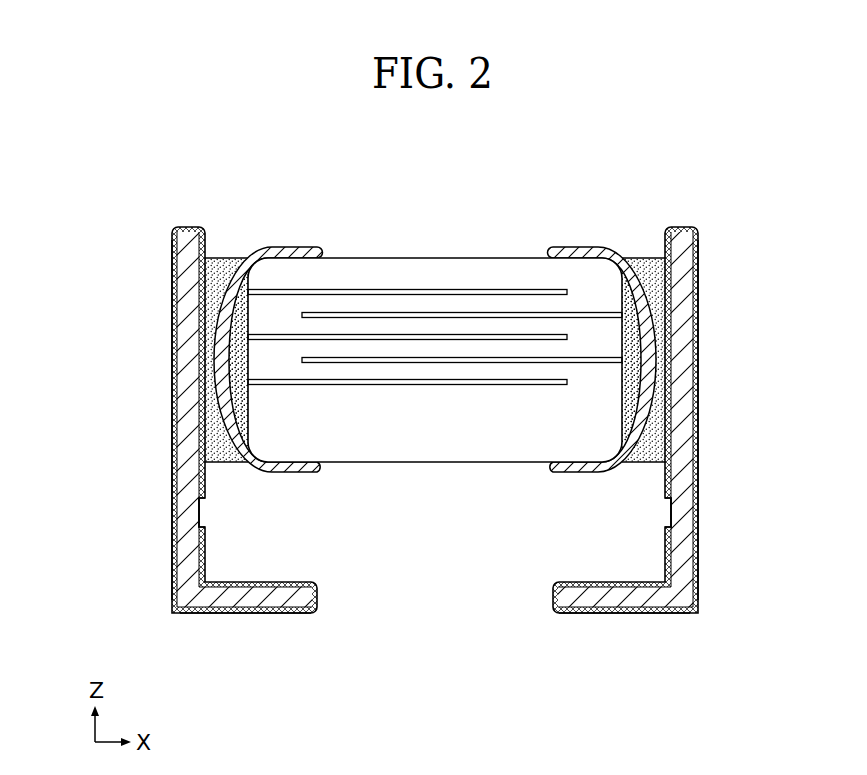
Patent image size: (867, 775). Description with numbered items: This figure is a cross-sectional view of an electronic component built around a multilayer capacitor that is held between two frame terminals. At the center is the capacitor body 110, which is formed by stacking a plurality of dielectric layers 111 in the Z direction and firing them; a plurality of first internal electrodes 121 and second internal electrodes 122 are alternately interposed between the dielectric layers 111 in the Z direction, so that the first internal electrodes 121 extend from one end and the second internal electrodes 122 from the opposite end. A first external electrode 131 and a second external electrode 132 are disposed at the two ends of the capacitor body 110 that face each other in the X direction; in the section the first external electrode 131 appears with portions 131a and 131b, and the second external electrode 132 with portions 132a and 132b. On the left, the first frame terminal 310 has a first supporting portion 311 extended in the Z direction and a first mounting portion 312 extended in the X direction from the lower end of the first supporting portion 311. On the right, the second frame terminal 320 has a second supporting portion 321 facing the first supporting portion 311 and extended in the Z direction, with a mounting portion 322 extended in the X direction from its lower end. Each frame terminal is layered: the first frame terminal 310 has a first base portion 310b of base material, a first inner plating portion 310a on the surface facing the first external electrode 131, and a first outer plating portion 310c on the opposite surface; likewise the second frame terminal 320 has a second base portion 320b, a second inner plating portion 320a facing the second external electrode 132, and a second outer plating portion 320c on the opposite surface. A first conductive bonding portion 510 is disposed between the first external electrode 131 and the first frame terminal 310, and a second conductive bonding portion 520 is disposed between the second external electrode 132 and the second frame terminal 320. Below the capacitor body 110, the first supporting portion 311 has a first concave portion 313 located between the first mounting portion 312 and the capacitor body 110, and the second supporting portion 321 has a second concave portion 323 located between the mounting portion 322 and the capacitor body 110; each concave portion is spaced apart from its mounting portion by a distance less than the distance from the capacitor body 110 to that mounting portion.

The capacitor body 110 is at (441, 462).
The dielectric layer 111 is at (605, 345).
The first internal electrode 121 is at (543, 335).
The second internal electrode 122 is at (543, 360).
The first external electrode 131 is at (284, 310).
The first electrode layer 131a is at (298, 254).
The first plating layer 131b is at (268, 249).
The second external electrode 132 is at (585, 310).
The second electrode layer 132a is at (612, 186).
The second plating layer 132b is at (600, 251).
The first frame terminal 310 is at (188, 431).
The first inner plating portion 310a is at (174, 378).
The first base portion 310b is at (190, 404).
The first outer plating portion 310c is at (201, 432).
The first supporting portion 311 is at (173, 566).
The first mounting portion 312 is at (240, 613).
The first concave portion 313 is at (164, 532).
The second frame terminal 320 is at (684, 431).
The second inner plating portion 320a is at (696, 378).
The second base portion 320b is at (680, 404).
The second outer plating portion 320c is at (668, 432).
The second supporting portion 321 is at (697, 566).
The mounting portion 322 is at (630, 613).
The second concave portion 323 is at (706, 532).
The first conductive bonding portion 510 is at (213, 258).
The second conductive bonding portion 520 is at (654, 258).